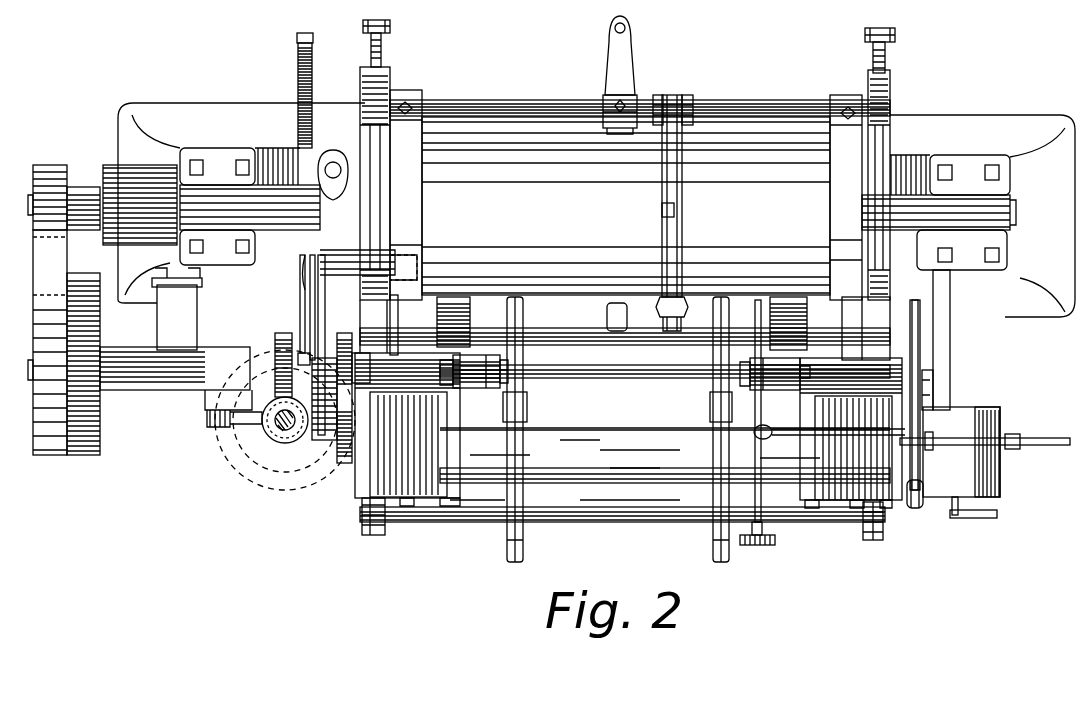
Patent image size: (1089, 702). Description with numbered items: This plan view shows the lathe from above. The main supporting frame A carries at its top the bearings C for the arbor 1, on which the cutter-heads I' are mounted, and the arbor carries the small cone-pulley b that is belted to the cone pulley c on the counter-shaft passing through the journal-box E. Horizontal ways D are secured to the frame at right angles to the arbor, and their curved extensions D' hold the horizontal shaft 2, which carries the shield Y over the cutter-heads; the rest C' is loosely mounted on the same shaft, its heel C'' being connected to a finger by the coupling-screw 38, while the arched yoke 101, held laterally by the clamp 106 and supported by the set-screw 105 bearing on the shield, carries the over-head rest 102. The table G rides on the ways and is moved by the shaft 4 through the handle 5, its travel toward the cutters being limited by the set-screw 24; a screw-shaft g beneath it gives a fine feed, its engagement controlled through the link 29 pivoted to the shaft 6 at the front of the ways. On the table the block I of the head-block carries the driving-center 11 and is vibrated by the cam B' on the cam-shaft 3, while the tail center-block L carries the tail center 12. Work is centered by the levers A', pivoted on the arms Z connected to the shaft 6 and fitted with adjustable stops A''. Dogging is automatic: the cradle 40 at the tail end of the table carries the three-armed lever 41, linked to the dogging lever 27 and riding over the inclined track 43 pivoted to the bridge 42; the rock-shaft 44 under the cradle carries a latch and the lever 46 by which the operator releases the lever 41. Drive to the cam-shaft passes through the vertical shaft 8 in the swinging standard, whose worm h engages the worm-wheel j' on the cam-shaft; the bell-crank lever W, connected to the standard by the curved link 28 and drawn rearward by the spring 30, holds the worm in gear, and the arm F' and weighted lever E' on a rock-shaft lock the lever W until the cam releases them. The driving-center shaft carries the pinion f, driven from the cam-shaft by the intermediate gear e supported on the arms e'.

The cone-pulley b is at (33, 187).
The bearing C is at (598, 207).
The rest C' is at (47, 342).
The cone pulley c is at (69, 368).
The main supporting frame A is at (595, 197).
The arbor 1 is at (349, 220).
The journal-box E is at (177, 309).
The arm F' is at (181, 399).
The gear j' is at (269, 359).
The vertical shaft 8 is at (286, 432).
The worm h is at (285, 420).
The curved link 28 is at (300, 330).
The bell-crank lever W is at (310, 296).
The lever E' is at (334, 345).
The pinion f is at (344, 385).
The intermediate gear e is at (329, 422).
The arm e' is at (340, 411).
The spiral spring 30 is at (294, 90).
The set-screw 24 is at (383, 50).
The curved extension D' is at (632, 181).
The way D is at (620, 195).
The shield Y is at (626, 206).
The horizontal shaft 2 is at (555, 104).
The heel C'' is at (604, 173).
The coupling-screw 38 is at (612, 29).
The arched yoke 101 is at (683, 196).
The clamp 106 is at (693, 102).
The set-screw 105 is at (660, 211).
The over-head rest 102 is at (665, 324).
The shaft 4 is at (578, 336).
The cam-shaft 3 is at (665, 362).
The cam B' is at (620, 372).
The driving-center 11 is at (472, 376).
The tail center 12 is at (798, 368).
The vibrating block I is at (407, 444).
The tail center-block L is at (851, 433).
The table G is at (625, 389).
The arm Z is at (507, 542).
The stop A'' is at (617, 402).
The lever A' is at (635, 466).
The shaft 6 is at (602, 520).
The screw-shaft g is at (756, 396).
The link 29 is at (780, 553).
The bridge 42 is at (950, 345).
The inclined track 43 is at (945, 405).
The cradle 40 is at (961, 452).
The three-armed lever 41 is at (1010, 434).
The dogging lever 27 is at (795, 440).
The handle 5 is at (920, 460).
The cutter-head I' is at (914, 509).
The rock-shaft 44 is at (945, 505).
The lever 46 is at (982, 518).